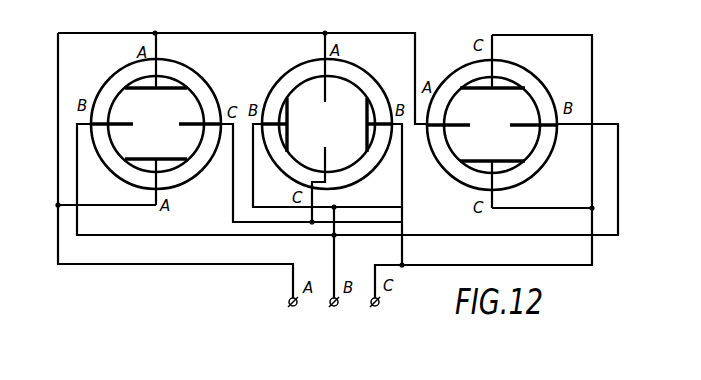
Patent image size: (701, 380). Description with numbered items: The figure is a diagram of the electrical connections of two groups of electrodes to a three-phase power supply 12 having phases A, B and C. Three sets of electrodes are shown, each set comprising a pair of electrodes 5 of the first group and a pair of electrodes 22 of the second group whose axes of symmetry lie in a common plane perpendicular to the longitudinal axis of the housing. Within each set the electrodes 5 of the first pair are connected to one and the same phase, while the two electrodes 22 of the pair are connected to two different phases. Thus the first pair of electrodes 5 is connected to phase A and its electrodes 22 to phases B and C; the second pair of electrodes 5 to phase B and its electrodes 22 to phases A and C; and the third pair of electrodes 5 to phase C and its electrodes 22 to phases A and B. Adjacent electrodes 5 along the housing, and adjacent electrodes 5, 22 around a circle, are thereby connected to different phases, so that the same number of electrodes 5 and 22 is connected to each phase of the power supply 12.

The electrodes of the first group 5 is at (167, 82).
The electrodes of the second group 22 is at (188, 120).
The three-phase power supply 12 is at (383, 306).